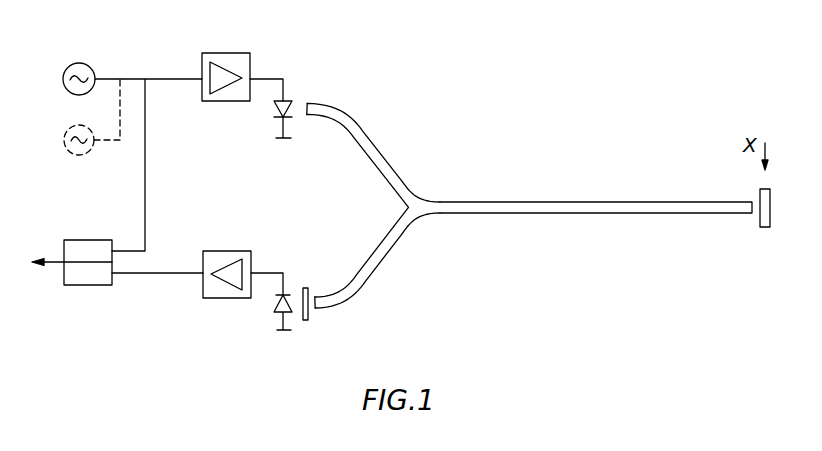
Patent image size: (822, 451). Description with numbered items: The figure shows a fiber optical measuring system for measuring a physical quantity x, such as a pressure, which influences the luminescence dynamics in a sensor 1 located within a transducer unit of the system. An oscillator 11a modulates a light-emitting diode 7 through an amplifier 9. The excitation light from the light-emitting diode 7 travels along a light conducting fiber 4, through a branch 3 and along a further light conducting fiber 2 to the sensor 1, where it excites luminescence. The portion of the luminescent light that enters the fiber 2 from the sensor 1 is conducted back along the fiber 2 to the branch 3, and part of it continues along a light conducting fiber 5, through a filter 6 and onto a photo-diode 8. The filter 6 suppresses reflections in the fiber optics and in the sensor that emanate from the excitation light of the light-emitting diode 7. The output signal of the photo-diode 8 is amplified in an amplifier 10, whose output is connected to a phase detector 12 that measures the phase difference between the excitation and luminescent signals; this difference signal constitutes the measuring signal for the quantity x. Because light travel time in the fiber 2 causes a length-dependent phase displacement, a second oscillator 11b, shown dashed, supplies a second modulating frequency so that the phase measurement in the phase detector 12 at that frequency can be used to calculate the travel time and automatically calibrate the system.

The sensor 1 is at (766, 229).
The light conducting fiber 2 is at (563, 202).
The branch 3 is at (423, 196).
The light conducting fiber 4 is at (373, 143).
The light conducting fiber 5 is at (378, 265).
The filter 6 is at (310, 322).
The light-emitting diode 7 is at (286, 99).
The photo-diode 8 is at (275, 310).
The amplifier 9 is at (230, 52).
The amplifier 10 is at (233, 251).
The oscillator 11a is at (84, 62).
The oscillator 11b is at (85, 154).
The phase detector 12 is at (86, 286).